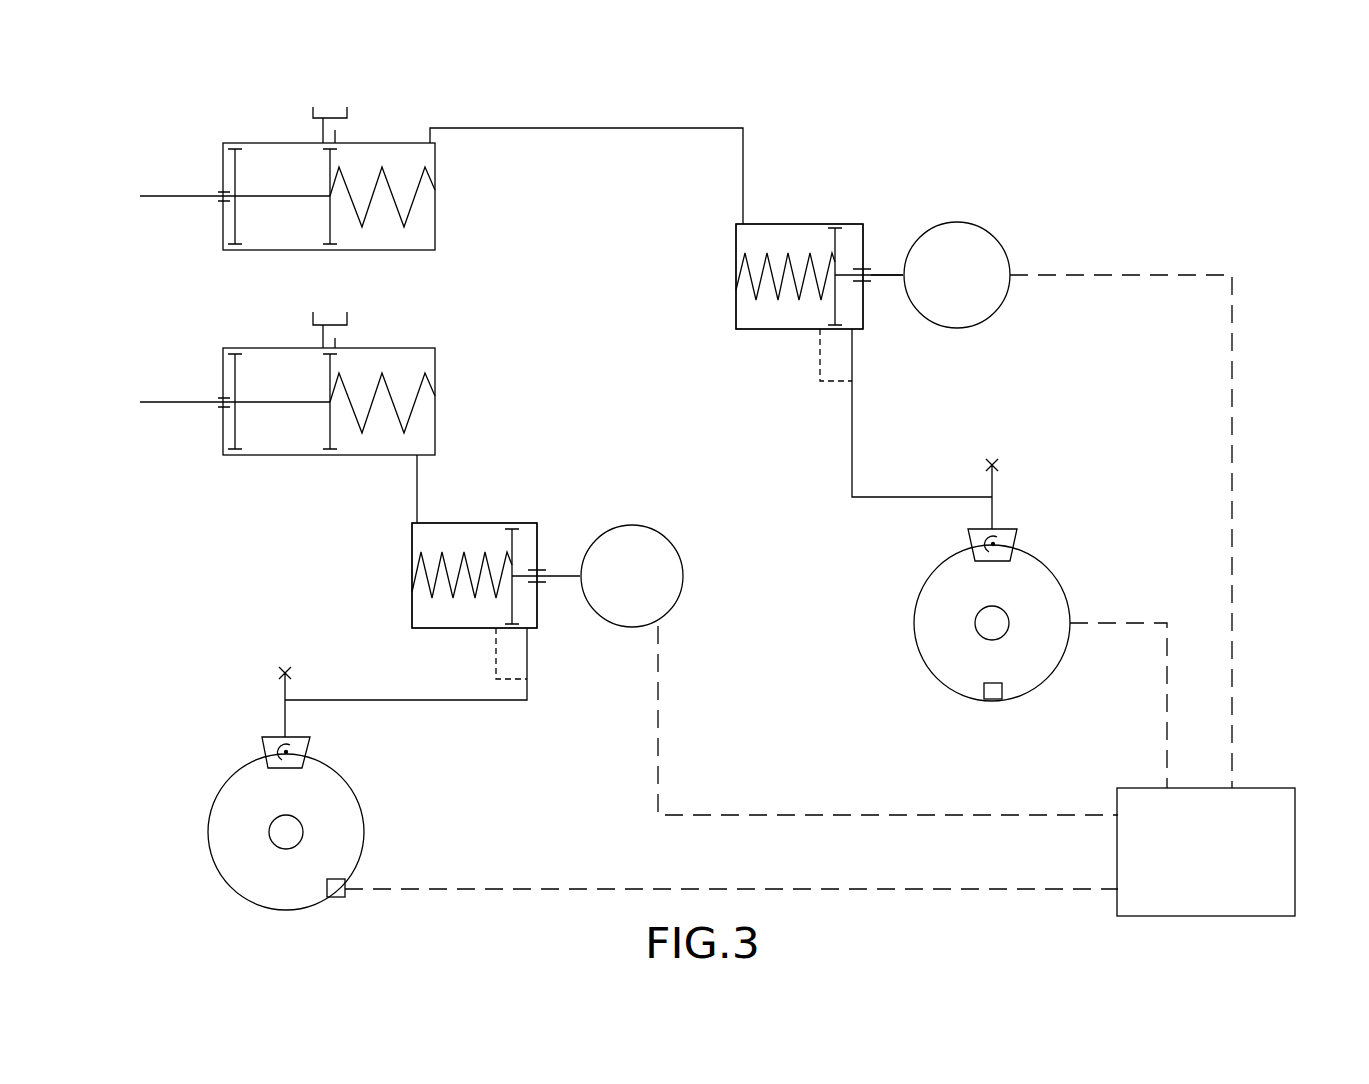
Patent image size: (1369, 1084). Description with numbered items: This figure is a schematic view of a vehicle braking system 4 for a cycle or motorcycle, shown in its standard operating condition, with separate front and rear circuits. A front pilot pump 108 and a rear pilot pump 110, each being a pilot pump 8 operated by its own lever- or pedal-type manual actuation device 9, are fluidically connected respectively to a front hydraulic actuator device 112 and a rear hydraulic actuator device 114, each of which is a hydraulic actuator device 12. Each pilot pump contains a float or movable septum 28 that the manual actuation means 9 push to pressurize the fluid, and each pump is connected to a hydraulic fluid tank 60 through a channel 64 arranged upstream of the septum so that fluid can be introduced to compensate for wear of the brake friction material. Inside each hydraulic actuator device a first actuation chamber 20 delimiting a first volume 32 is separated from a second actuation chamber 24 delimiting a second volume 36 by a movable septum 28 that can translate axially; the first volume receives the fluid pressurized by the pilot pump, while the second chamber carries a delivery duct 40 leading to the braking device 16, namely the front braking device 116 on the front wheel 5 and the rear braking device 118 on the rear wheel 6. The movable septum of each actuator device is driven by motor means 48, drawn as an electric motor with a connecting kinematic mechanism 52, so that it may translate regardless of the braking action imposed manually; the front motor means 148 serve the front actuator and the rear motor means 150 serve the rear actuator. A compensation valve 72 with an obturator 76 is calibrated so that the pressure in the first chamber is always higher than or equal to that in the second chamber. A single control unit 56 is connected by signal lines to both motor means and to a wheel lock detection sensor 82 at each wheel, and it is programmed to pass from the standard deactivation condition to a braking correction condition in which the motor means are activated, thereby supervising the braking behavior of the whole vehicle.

The vehicle braking system 4 is at (1248, 130).
The front wheel 5 is at (232, 851).
The rear wheel 6 is at (955, 672).
The pilot pump 8 is at (245, 320).
The front pilot pump 108 is at (222, 433).
The rear pilot pump 110 is at (222, 228).
The manual actuation device 9 is at (150, 196).
The hydraulic actuator device 12 is at (580, 431).
The front hydraulic actuator device 112 is at (423, 613).
The rear hydraulic actuator device 114 is at (753, 318).
The braking device 16 is at (638, 613).
The front braking device 116 is at (262, 748).
The rear braking device 118 is at (1018, 535).
The first actuation chamber 20 is at (638, 378).
The first volume 32 is at (488, 523).
The second actuation chamber 24 is at (785, 469).
The second volume 36 is at (537, 620).
The movable septum 28 is at (330, 425).
The delivery duct 40 is at (530, 666).
The motor means 48 is at (883, 418).
The front motor means 148 is at (684, 577).
The rear motor means 150 is at (1010, 262).
The connecting kinematic mechanism 52 is at (880, 270).
The control unit 56 is at (1263, 817).
The hydraulic fluid tank 60 is at (323, 108).
The channel 64 is at (337, 133).
The compensation valve 72 is at (717, 790).
The obturator 76 is at (345, 889).
The wheel lock detection sensor 82 is at (330, 174).